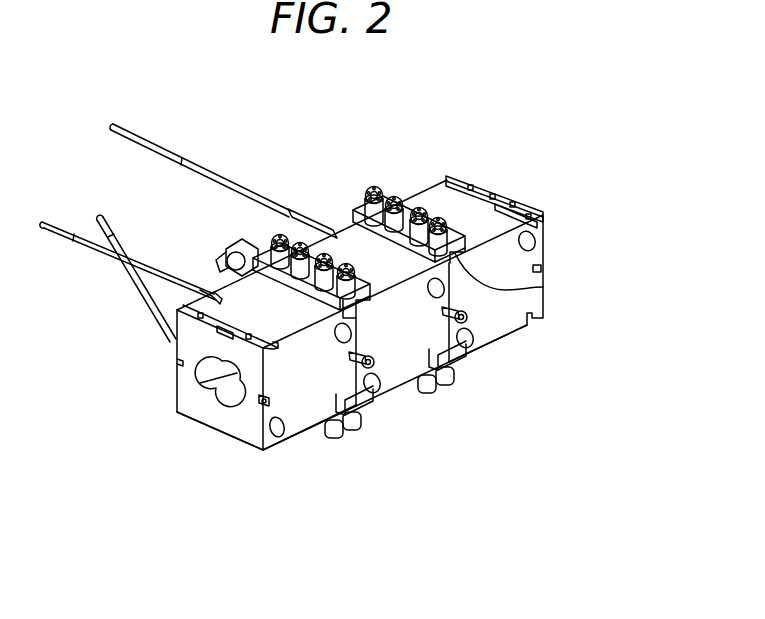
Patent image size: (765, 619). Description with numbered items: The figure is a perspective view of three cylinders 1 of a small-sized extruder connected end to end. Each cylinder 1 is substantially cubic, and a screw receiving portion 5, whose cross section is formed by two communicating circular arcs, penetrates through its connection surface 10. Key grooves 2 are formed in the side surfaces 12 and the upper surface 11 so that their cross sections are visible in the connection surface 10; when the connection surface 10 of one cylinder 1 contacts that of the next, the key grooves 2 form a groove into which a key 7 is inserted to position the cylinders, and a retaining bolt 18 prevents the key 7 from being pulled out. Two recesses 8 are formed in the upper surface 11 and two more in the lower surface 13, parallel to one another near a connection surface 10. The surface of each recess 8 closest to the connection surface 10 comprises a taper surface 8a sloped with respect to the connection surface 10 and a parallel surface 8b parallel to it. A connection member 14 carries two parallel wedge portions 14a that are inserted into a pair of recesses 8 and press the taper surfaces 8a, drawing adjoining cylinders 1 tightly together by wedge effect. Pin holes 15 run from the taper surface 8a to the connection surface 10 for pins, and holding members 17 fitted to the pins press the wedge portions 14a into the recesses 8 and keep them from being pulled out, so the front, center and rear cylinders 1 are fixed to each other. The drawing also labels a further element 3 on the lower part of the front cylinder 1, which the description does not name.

The cylinder 1 is at (547, 228).
The key groove 2 is at (540, 270).
The mounting hole 3 is at (270, 445).
The screw receiving portion 5 is at (193, 393).
The key 7 is at (350, 426).
The recess 8 is at (448, 176).
The taper surface 8a is at (500, 198).
The parallel surface 8b is at (530, 206).
The connection surface 10 is at (230, 420).
The upper surface 11 is at (217, 292).
The side surface 12 is at (307, 413).
The lower surface 13 is at (498, 342).
The connection member 14 is at (355, 208).
The wedge portion 14a is at (538, 286).
The pin hole 15 is at (153, 322).
The holding member 17 is at (374, 185).
The retaining bolt 18 is at (375, 368).